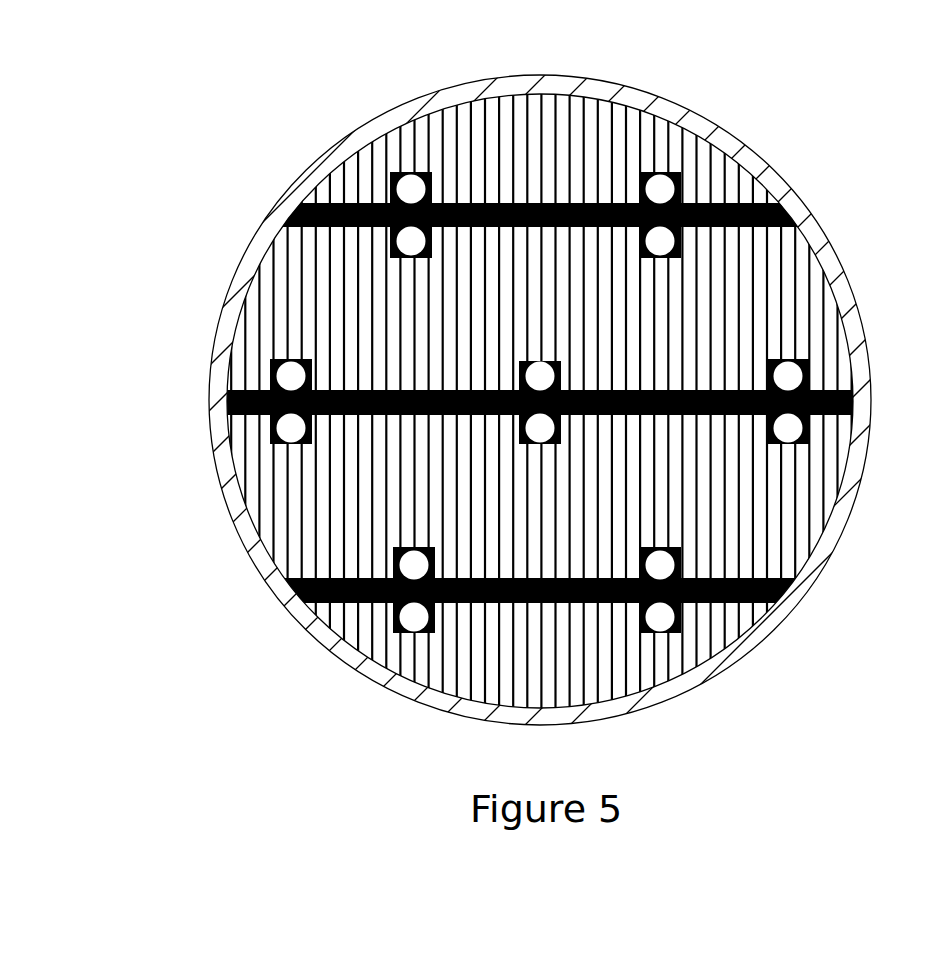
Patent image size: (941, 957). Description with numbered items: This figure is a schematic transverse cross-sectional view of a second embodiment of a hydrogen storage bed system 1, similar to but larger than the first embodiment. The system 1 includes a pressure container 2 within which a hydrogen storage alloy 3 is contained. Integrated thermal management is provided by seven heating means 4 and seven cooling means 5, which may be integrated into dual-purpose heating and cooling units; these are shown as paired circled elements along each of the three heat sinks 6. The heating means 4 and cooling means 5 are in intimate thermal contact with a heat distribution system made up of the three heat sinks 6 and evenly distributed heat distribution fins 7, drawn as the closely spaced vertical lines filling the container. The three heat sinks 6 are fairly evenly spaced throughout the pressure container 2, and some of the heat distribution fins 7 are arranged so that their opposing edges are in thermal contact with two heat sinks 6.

The hydrogen storage bed system 1 is at (724, 700).
The pressure container 2 is at (752, 640).
The hydrogen storage alloy 3 is at (590, 110).
The heating means 4 is at (539, 403).
The cooling means 5 is at (539, 402).
The heat sink 6 is at (226, 402).
The heat distribution fins 7 is at (330, 242).